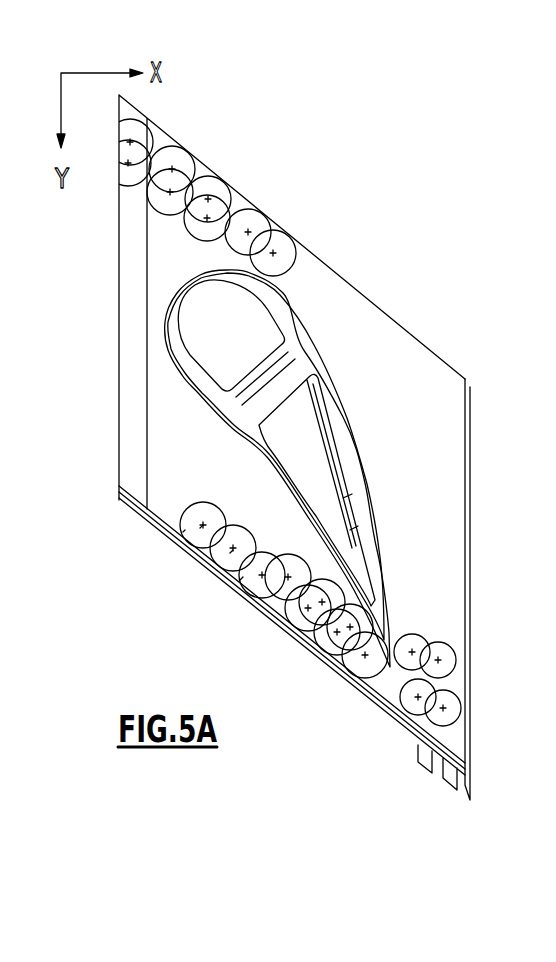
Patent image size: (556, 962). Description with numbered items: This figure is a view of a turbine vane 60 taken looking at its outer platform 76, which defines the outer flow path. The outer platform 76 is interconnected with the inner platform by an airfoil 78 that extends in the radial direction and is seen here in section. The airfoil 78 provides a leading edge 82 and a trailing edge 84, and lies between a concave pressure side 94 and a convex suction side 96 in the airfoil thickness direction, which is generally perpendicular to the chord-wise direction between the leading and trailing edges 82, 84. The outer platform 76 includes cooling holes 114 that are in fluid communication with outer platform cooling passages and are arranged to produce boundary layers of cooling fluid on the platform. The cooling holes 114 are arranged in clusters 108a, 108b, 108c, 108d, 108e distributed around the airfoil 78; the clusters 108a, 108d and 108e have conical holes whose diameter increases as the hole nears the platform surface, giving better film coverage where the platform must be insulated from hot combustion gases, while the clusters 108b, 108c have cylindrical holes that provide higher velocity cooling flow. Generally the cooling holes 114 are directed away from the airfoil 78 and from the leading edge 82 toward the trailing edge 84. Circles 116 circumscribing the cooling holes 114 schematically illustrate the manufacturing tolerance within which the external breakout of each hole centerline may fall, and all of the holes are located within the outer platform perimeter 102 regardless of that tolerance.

The vane 60 is at (460, 332).
The outer platform 76 is at (430, 402).
The airfoil 78 is at (367, 483).
The leading edge 82 is at (203, 272).
The trailing edge 84 is at (427, 672).
The pressure side 94 is at (267, 458).
The suction side 96 is at (330, 378).
The outer platform perimeter 102 is at (120, 485).
The cluster 108a is at (143, 214).
The cluster 108b is at (272, 220).
The cluster 108c is at (408, 709).
The cluster 108d is at (290, 642).
The cluster 108e is at (181, 505).
The cooling holes 114 is at (185, 530).
The circles 116 is at (203, 525).